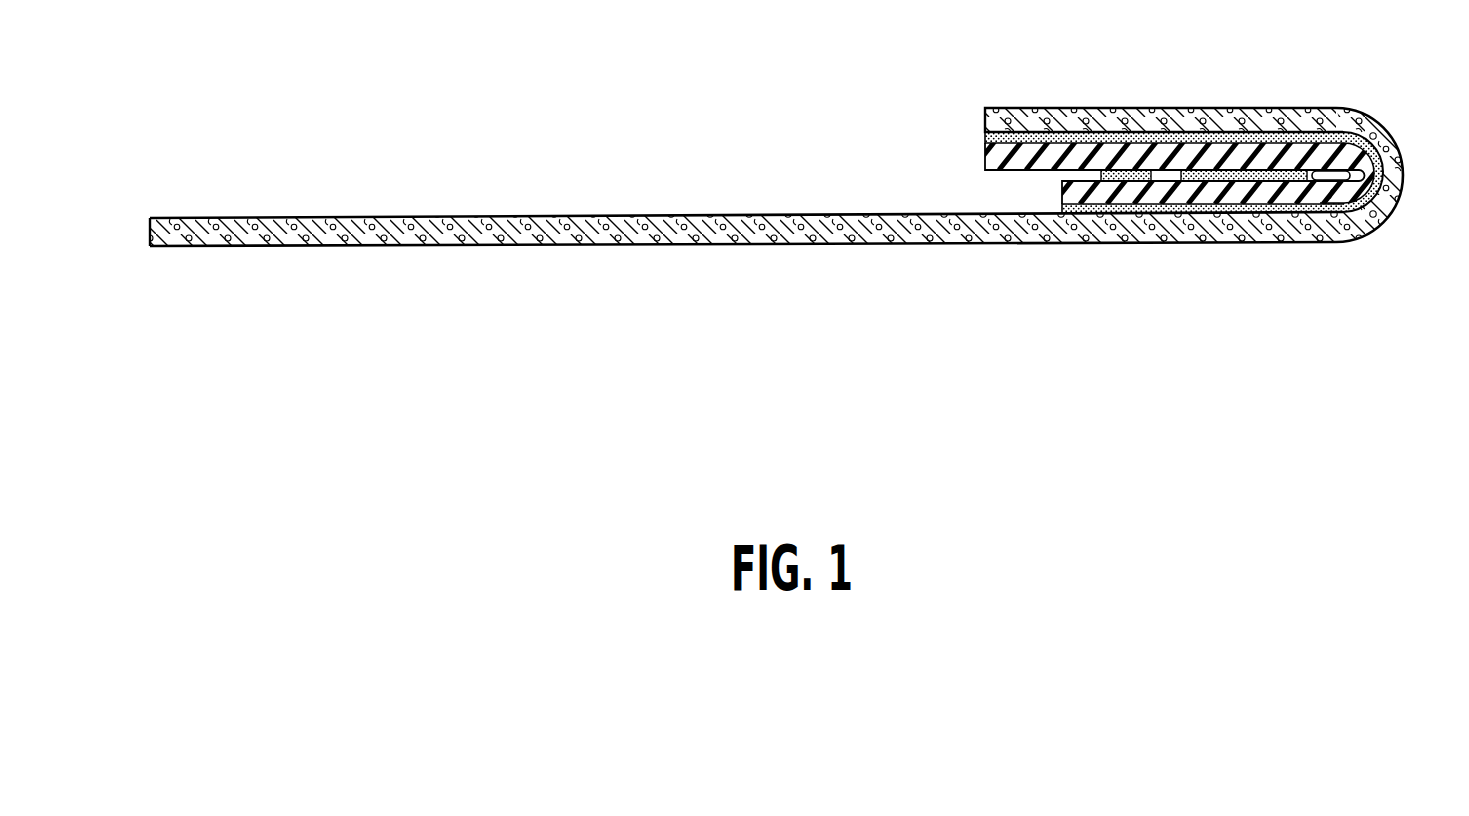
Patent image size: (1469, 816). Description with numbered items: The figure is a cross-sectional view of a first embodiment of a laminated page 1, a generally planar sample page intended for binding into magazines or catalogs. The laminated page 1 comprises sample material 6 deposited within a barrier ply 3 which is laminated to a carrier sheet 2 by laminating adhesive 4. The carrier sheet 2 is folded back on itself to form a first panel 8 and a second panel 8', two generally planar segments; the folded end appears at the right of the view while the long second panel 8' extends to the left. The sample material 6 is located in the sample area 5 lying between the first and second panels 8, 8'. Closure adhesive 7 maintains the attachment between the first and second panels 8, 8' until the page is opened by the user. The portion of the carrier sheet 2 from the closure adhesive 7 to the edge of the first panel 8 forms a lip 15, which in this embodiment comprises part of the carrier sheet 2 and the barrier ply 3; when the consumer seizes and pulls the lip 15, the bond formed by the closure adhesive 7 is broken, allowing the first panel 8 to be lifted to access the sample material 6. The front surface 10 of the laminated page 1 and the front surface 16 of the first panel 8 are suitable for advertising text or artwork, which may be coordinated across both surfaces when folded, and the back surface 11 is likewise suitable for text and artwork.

The laminated page 1 is at (806, 215).
The carrier sheet 2 is at (746, 232).
The barrier ply 3 is at (987, 167).
The laminating adhesive 4 is at (988, 137).
The sample area 5 is at (1298, 168).
The sample material 6 is at (1232, 170).
The closure adhesive 7 is at (1095, 173).
The first panel 8 is at (1441, 142).
The second panel 8' is at (775, 355).
The front surface 10 is at (335, 217).
The back surface 11 is at (337, 247).
The lip 15 is at (985, 94).
The front surface of first panel 16 is at (1205, 108).